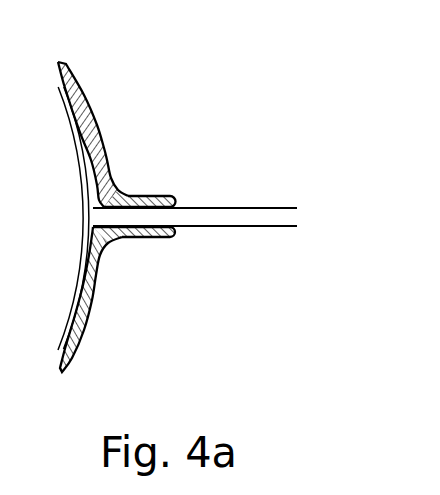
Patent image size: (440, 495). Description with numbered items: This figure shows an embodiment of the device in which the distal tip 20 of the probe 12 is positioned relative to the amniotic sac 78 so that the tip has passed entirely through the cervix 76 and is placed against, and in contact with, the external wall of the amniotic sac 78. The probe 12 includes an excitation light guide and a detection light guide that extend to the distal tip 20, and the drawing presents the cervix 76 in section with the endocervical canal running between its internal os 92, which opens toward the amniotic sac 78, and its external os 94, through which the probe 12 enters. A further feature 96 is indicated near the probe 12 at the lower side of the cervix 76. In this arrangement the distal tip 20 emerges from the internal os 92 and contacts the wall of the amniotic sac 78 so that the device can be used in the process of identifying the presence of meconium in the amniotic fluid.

The cervix 76 is at (260, 89).
The amniotic sac 78 is at (80, 315).
The distal tip 20 is at (105, 181).
The internal os 92 is at (127, 195).
The external os 94 is at (174, 234).
The lower sealing portion 96 is at (148, 218).
The probe 12 is at (272, 213).